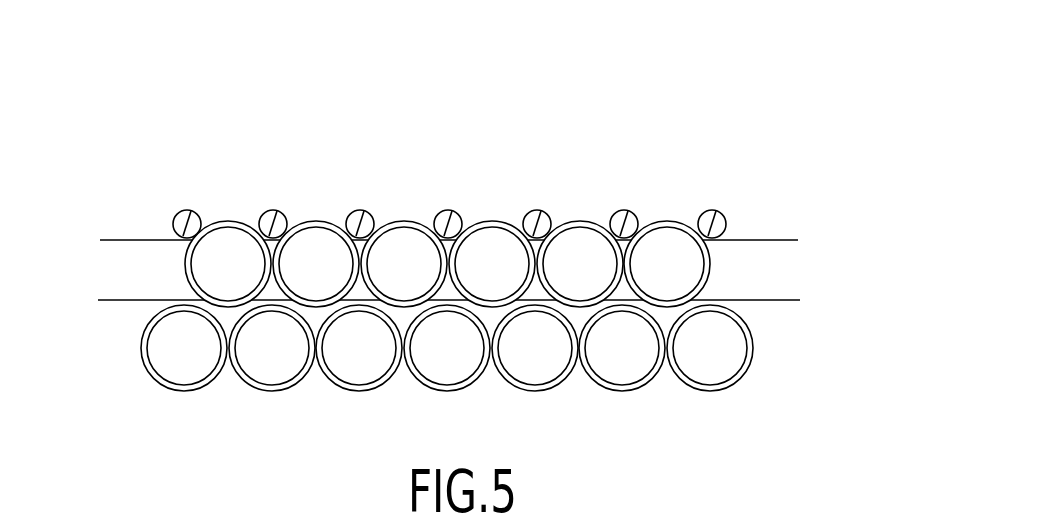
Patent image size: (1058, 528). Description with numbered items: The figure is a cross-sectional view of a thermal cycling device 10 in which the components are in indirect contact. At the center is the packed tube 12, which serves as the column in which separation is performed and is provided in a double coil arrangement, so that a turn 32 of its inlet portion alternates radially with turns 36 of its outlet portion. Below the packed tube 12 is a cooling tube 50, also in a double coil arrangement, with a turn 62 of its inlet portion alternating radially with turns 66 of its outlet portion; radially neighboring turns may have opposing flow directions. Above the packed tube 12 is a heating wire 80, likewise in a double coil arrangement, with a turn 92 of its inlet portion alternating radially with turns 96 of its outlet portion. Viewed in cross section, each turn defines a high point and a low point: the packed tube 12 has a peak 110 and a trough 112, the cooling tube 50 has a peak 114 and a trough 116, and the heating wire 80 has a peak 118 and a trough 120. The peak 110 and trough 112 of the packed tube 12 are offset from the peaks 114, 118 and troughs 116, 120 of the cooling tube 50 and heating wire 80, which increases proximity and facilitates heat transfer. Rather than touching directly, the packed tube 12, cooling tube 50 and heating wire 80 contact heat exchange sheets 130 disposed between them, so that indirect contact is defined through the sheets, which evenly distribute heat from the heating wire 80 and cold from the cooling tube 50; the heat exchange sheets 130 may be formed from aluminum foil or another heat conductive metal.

The thermal cycling device 10 is at (475, 285).
The packed tube 12 is at (727, 268).
The turn of the inlet portion 32 is at (575, 217).
The turns of the outlet portion 36 is at (667, 216).
The cooling tube 50 is at (766, 343).
The turn of the inlet portion 62 is at (622, 398).
The turns of the outlet portion 66 is at (711, 398).
The heating wire 80 is at (747, 215).
The turn of the inlet portion 92 is at (624, 207).
The turns of the outlet portion 96 is at (717, 209).
The peak 110 is at (316, 222).
The trough 112 is at (328, 322).
The peak 114 is at (272, 283).
The trough 116 is at (272, 391).
The peak 118 is at (273, 210).
The trough 120 is at (268, 236).
The heat exchange sheets 130 is at (120, 240).